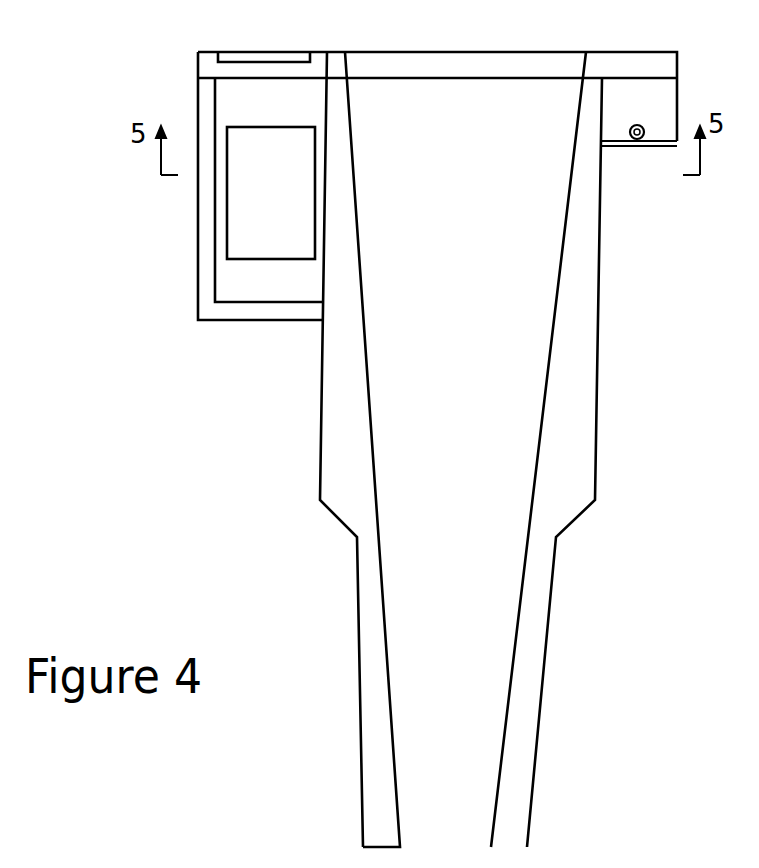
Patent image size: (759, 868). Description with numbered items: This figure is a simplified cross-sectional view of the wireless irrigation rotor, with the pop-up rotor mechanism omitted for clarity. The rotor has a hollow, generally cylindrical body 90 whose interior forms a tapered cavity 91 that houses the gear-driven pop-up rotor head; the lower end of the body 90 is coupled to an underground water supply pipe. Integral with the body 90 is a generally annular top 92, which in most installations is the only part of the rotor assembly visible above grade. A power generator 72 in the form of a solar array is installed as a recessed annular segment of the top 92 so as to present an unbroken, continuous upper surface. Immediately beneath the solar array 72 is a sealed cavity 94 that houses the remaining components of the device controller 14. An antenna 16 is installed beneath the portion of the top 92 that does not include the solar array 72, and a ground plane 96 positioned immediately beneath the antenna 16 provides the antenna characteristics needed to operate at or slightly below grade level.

The device controller 14 is at (244, 186).
The antenna 16 is at (637, 140).
The power generator 72 is at (238, 52).
The body 90 is at (578, 301).
The tapered cavity 91 is at (465, 449).
The top 92 is at (640, 52).
The sealed cavity 94 is at (297, 283).
The ground plane 96 is at (617, 146).